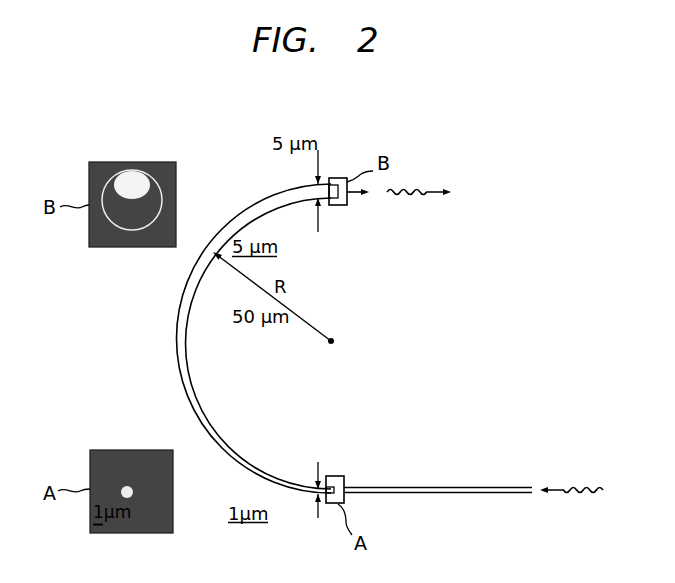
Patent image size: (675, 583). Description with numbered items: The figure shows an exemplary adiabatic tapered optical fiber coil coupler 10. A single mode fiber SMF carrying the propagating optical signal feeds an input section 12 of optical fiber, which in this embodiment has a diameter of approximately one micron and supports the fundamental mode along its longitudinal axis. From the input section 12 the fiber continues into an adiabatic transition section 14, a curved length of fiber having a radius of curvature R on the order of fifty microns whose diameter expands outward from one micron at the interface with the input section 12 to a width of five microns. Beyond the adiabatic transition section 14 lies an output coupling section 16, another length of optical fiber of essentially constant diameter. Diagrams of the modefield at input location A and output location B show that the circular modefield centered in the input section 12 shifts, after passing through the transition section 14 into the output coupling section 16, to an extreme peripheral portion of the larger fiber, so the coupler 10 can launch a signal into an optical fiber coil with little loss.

The adiabatic tapered optical fiber coil coupler 10 is at (460, 249).
The input section 12 is at (370, 486).
The adiabatic transition section 14 is at (177, 335).
The output coupling section 16 is at (329, 178).
The single mode fiber SMF is at (445, 488).